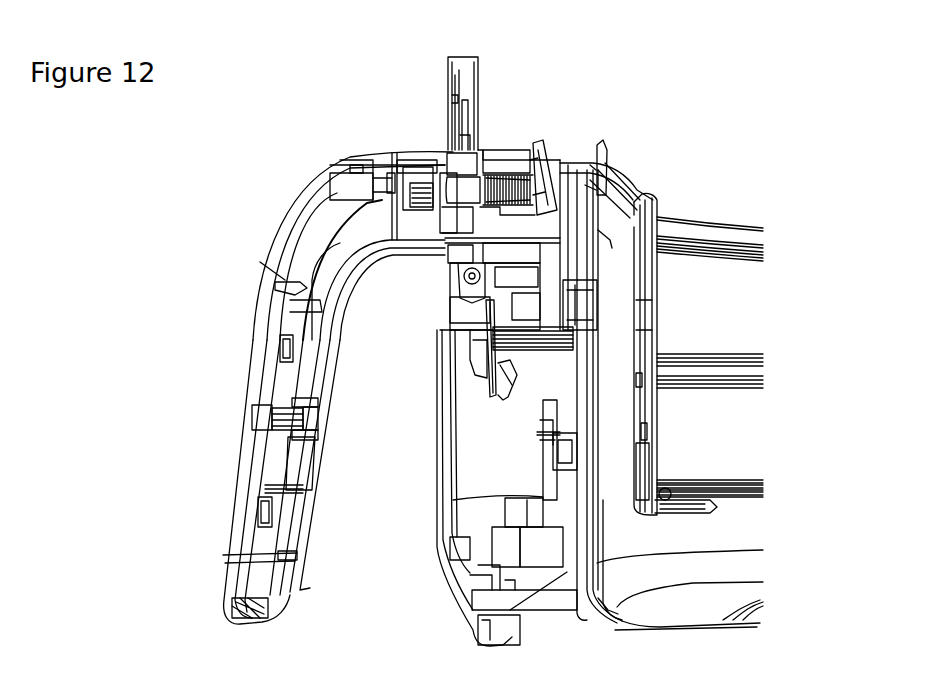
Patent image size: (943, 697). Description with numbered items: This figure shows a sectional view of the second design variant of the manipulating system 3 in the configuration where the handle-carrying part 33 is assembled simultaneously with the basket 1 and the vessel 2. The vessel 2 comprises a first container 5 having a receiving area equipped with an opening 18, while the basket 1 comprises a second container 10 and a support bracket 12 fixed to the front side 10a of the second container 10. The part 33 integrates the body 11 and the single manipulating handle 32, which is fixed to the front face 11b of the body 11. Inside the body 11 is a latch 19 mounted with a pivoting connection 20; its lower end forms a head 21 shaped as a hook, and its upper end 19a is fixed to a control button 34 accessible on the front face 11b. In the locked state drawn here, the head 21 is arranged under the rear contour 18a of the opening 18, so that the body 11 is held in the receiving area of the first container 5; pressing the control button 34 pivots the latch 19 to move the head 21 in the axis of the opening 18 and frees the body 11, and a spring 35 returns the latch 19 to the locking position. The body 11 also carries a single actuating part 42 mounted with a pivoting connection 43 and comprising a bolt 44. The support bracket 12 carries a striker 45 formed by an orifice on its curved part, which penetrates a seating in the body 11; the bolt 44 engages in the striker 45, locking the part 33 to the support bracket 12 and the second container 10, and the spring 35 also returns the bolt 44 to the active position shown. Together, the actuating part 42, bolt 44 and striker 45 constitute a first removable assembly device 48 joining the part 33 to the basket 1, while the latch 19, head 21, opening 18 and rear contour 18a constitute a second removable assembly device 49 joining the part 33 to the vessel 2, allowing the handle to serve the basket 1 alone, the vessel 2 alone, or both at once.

The basket 1 is at (770, 274).
The vessel 2 is at (775, 542).
The manipulating system 3 is at (570, 116).
The first container 5 is at (671, 630).
The second container 10 is at (741, 222).
The front side 10a is at (660, 332).
The body 11 is at (482, 48).
The front face 11b is at (470, 318).
The support bracket 12 is at (590, 162).
The opening 18 is at (480, 336).
The rear contour 18a is at (602, 384).
The latch 19 is at (488, 239).
The upper end 19a is at (466, 115).
The pivoting connection 20 is at (460, 288).
The head 21 is at (505, 380).
The manipulating handle 32 is at (247, 381).
The part 33 is at (387, 140).
The control button 34 is at (448, 92).
The spring 35 is at (496, 170).
The actuating part 42 is at (503, 230).
The pivoting connection 43 is at (530, 255).
The bolt 44 is at (543, 207).
The striker 45 is at (600, 192).
The first removable assembly device 48 is at (556, 233).
The second removable assembly device 49 is at (455, 396).